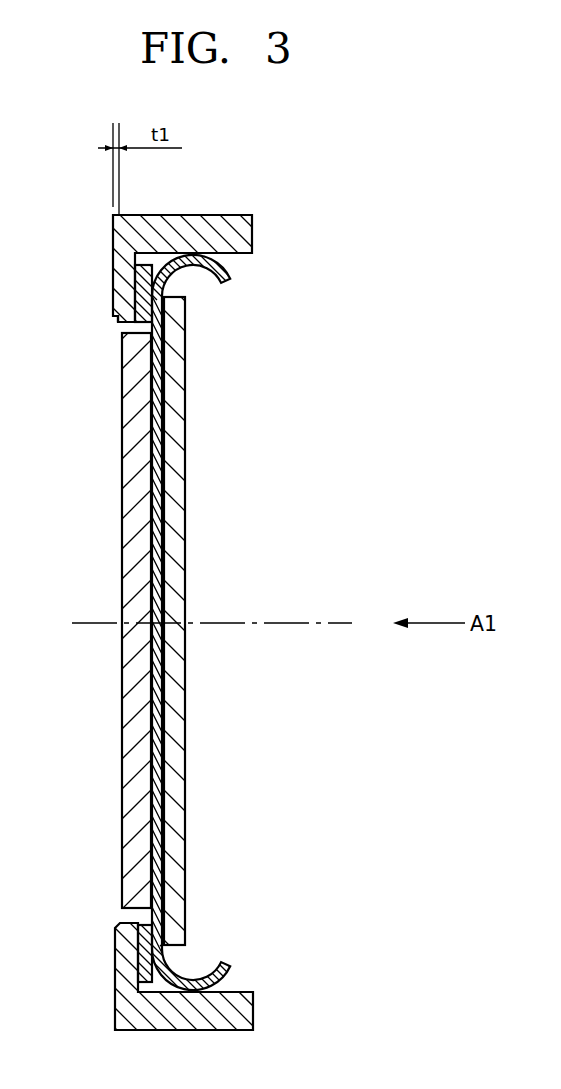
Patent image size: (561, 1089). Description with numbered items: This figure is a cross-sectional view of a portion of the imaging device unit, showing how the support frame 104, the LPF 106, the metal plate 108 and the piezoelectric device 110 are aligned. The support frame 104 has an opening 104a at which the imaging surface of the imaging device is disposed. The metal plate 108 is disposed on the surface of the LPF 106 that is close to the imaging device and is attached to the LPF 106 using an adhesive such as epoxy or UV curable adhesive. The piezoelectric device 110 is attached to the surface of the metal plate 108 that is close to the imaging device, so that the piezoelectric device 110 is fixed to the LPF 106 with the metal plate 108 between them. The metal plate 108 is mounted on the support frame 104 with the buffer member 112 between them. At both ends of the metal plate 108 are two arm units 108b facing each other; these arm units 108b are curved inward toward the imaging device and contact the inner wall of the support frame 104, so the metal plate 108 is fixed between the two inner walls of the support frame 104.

The support frame 104 is at (238, 222).
The opening 104a is at (120, 323).
The LPF 106 is at (132, 490).
The metal plate 108 is at (150, 372).
The arm unit 108b is at (234, 266).
The piezoelectric device 110 is at (175, 385).
The buffer member 112 is at (133, 295).